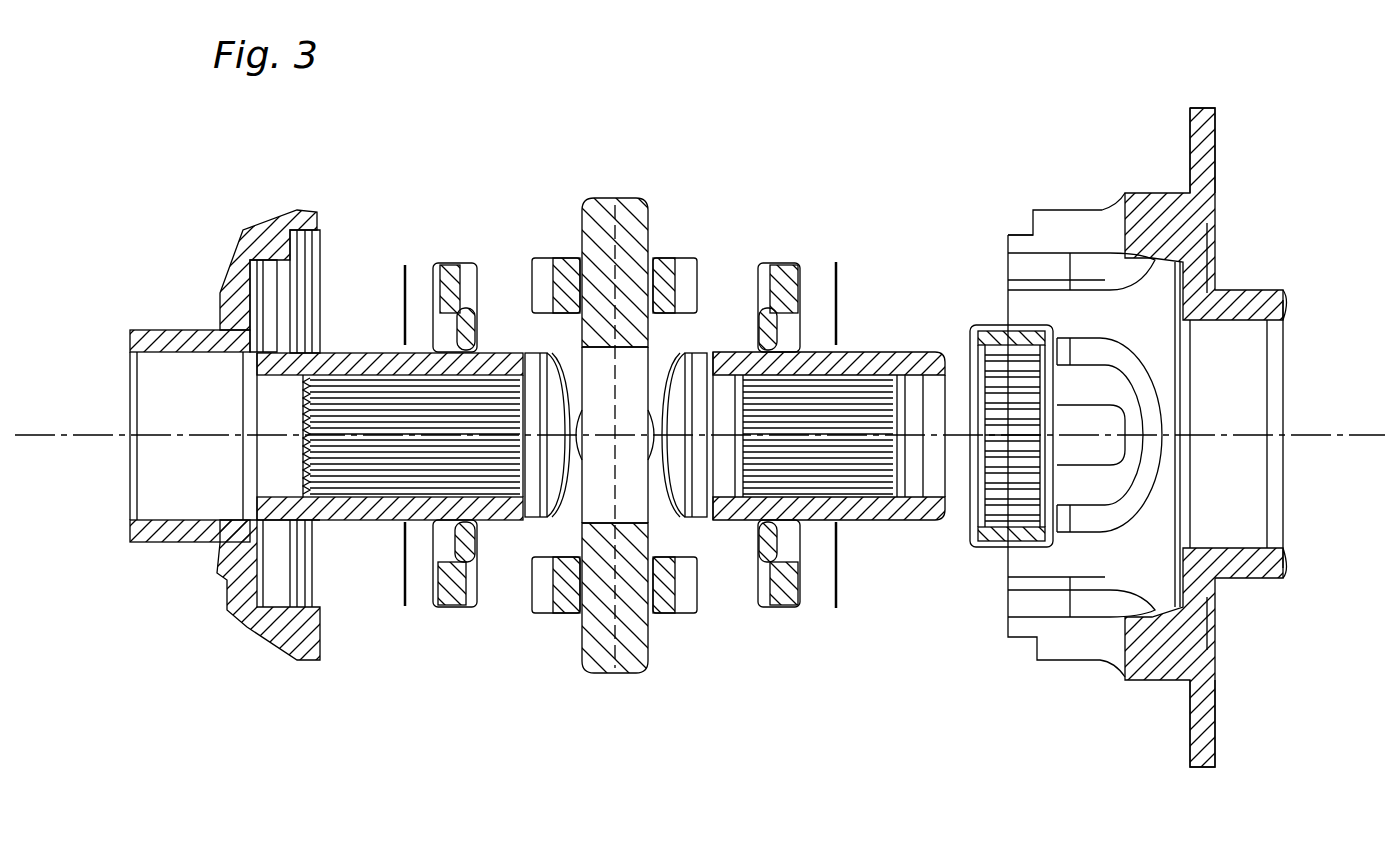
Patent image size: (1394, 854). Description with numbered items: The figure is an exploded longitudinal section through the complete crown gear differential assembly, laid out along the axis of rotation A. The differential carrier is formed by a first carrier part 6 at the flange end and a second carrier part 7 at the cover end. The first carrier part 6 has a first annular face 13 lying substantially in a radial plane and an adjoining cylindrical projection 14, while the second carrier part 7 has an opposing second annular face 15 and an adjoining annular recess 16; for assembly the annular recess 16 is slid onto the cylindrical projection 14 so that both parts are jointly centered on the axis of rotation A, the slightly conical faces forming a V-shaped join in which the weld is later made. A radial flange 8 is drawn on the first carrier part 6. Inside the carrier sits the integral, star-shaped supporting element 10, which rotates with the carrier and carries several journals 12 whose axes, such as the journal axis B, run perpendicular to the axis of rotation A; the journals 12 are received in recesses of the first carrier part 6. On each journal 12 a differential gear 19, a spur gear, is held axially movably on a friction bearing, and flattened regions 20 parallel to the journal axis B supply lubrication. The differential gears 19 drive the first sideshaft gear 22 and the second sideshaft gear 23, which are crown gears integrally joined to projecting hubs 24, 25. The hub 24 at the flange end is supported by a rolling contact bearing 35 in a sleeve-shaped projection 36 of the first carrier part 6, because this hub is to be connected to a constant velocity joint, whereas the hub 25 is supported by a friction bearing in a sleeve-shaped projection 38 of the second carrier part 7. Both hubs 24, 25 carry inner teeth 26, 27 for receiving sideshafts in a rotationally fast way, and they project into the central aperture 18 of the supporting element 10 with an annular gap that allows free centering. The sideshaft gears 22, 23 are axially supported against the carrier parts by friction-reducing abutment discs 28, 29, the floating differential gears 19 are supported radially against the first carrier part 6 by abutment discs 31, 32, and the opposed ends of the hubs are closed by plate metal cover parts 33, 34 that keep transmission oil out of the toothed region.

The first carrier part 6 is at (1208, 197).
The second carrier part 7 is at (246, 242).
The flange 8 is at (1206, 130).
The supporting element 10 is at (618, 182).
The journal 12 is at (636, 222).
The first annular face 13 is at (1020, 232).
The cylindrical projection 14 is at (1006, 233).
The second annular face 15 is at (322, 212).
The annular recess 16 is at (306, 252).
The central aperture 18 is at (650, 350).
The differential gear 19 is at (546, 283).
The flattened region 20 is at (562, 260).
The first sideshaft gear 22 is at (775, 270).
The second sideshaft gear 23 is at (450, 270).
The hub 24 is at (860, 355).
The hub 25 is at (346, 362).
The inner teeth 26 is at (872, 480).
The inner teeth 27 is at (378, 480).
The abutment disc 28 is at (838, 262).
The abutment disc 29 is at (404, 263).
The abutment disc 31 is at (676, 614).
The abutment disc 32 is at (672, 262).
The cover part 33 is at (697, 517).
The cover part 34 is at (540, 517).
The rolling contact bearing 35 is at (976, 326).
The sleeve-shaped projection 36 is at (1252, 298).
The sleeve-shaped projection 38 is at (152, 330).
The axis of rotation A is at (1308, 430).
The journal axis B is at (645, 650).